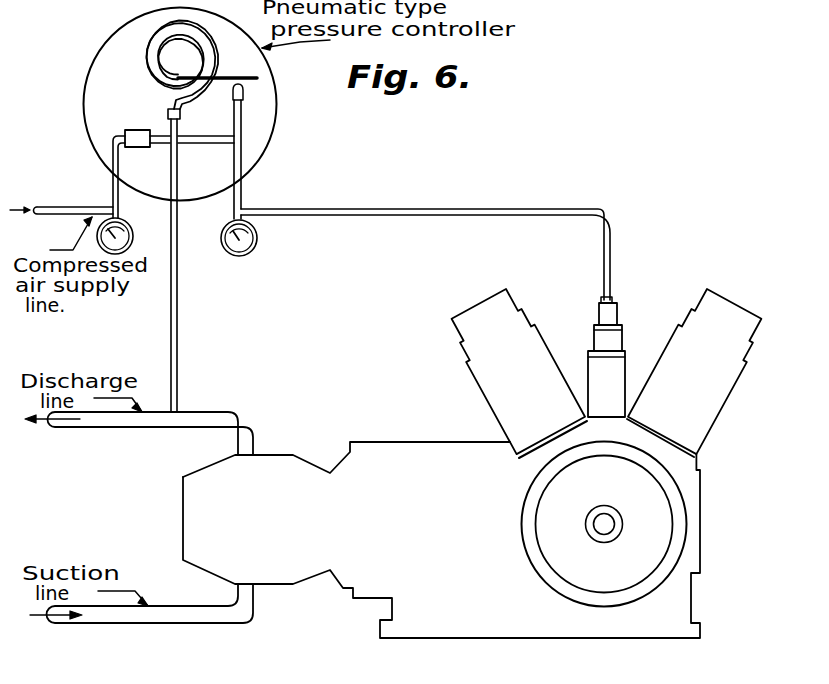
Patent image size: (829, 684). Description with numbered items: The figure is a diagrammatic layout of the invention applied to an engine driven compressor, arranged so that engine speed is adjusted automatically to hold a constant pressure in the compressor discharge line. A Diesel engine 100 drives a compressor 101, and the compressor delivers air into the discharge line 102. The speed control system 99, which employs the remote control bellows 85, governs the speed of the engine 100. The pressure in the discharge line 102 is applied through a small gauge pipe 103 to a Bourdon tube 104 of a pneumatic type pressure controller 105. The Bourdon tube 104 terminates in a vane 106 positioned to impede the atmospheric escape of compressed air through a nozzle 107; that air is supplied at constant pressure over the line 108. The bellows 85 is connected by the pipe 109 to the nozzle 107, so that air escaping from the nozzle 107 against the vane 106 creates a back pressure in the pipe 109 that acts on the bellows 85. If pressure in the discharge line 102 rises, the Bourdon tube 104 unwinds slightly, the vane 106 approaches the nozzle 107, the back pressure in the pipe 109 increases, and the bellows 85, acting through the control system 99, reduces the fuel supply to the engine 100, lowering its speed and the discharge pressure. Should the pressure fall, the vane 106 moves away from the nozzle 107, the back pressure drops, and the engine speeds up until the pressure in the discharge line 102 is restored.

The remote control bellows 85 is at (603, 312).
The speed control system 99 is at (590, 365).
The Diesel engine 100 is at (687, 525).
The compressor 101 is at (279, 460).
The discharge line 102 is at (206, 412).
The gauge pipe 103 is at (178, 321).
The Bourdon tube 104 is at (146, 45).
The pneumatic type pressure controller 105 is at (92, 99).
The vane 106 is at (258, 74).
The nozzle 107 is at (246, 94).
The line 108 is at (57, 206).
The pipe 109 is at (402, 208).